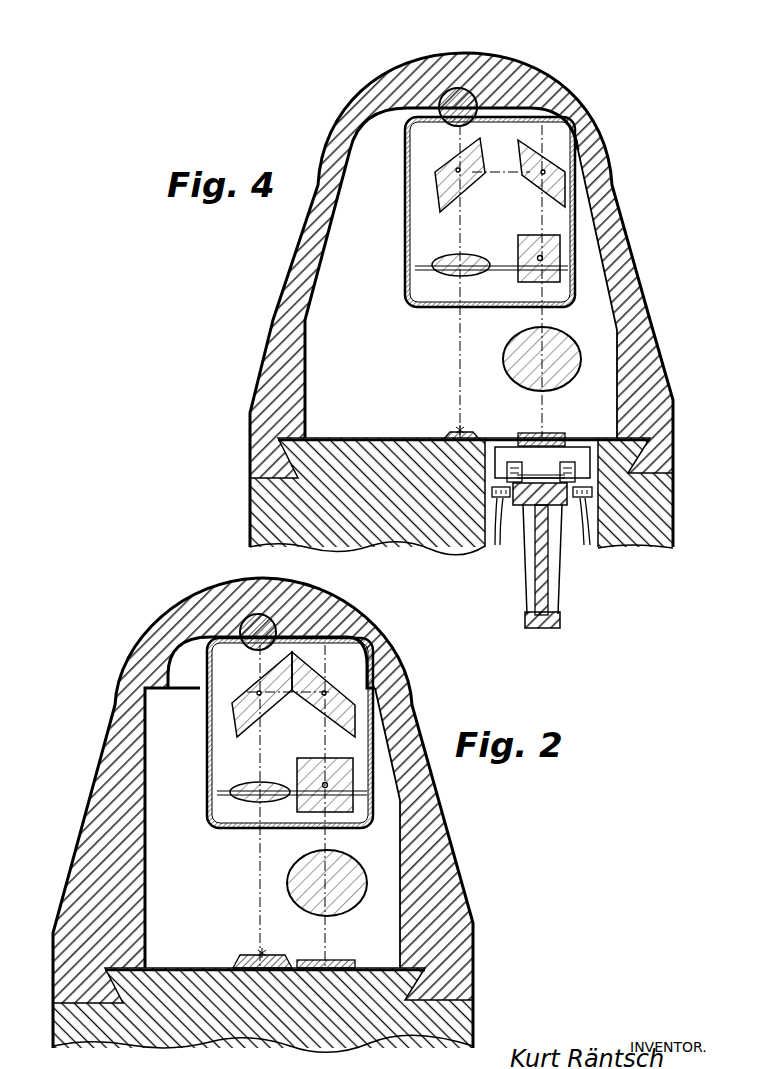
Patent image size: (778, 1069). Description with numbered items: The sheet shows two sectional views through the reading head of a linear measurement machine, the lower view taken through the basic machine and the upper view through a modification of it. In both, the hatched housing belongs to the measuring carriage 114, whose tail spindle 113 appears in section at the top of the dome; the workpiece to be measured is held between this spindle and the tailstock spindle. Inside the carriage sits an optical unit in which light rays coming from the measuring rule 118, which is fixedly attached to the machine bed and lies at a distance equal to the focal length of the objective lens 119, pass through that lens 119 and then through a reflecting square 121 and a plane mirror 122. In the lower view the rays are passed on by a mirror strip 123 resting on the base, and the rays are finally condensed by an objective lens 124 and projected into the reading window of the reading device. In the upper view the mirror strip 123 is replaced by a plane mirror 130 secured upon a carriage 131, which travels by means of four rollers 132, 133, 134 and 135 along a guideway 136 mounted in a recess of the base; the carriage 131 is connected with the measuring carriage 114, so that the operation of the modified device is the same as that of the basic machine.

In FIG. 4, the tail spindle 113 is at (456, 100).
In FIG. 2, the tail spindle 113 is at (250, 624).
In FIG. 4, the measuring carriage 114 is at (535, 82).
In FIG. 2, the measuring carriage 114 is at (152, 637).
In FIG. 4, the measuring rule 118 is at (446, 432).
In FIG. 2, the measuring rule 118 is at (249, 953).
In FIG. 4, the objective lens 119 is at (447, 258).
In FIG. 2, the objective lens 119 is at (245, 783).
In FIG. 4, the reflecting square 121 is at (517, 150).
In FIG. 2, the reflecting square 121 is at (250, 700).
In FIG. 4, the plane mirror 122 is at (519, 243).
In FIG. 2, the plane mirror 122 is at (300, 766).
In FIG. 2, the mirror strip 123 is at (340, 960).
In FIG. 4, the objective lens 124 is at (576, 345).
In FIG. 2, the objective lens 124 is at (356, 870).
In FIG. 4, the plane mirror 130 is at (557, 435).
In FIG. 4, the carriage 131 is at (585, 452).
In FIG. 4, the roller 132 is at (512, 462).
In FIG. 4, the roller 133 is at (497, 540).
In FIG. 4, the roller 134 is at (575, 548).
In FIG. 4, the roller 135 is at (593, 546).
In FIG. 4, the guideway 136 is at (530, 548).